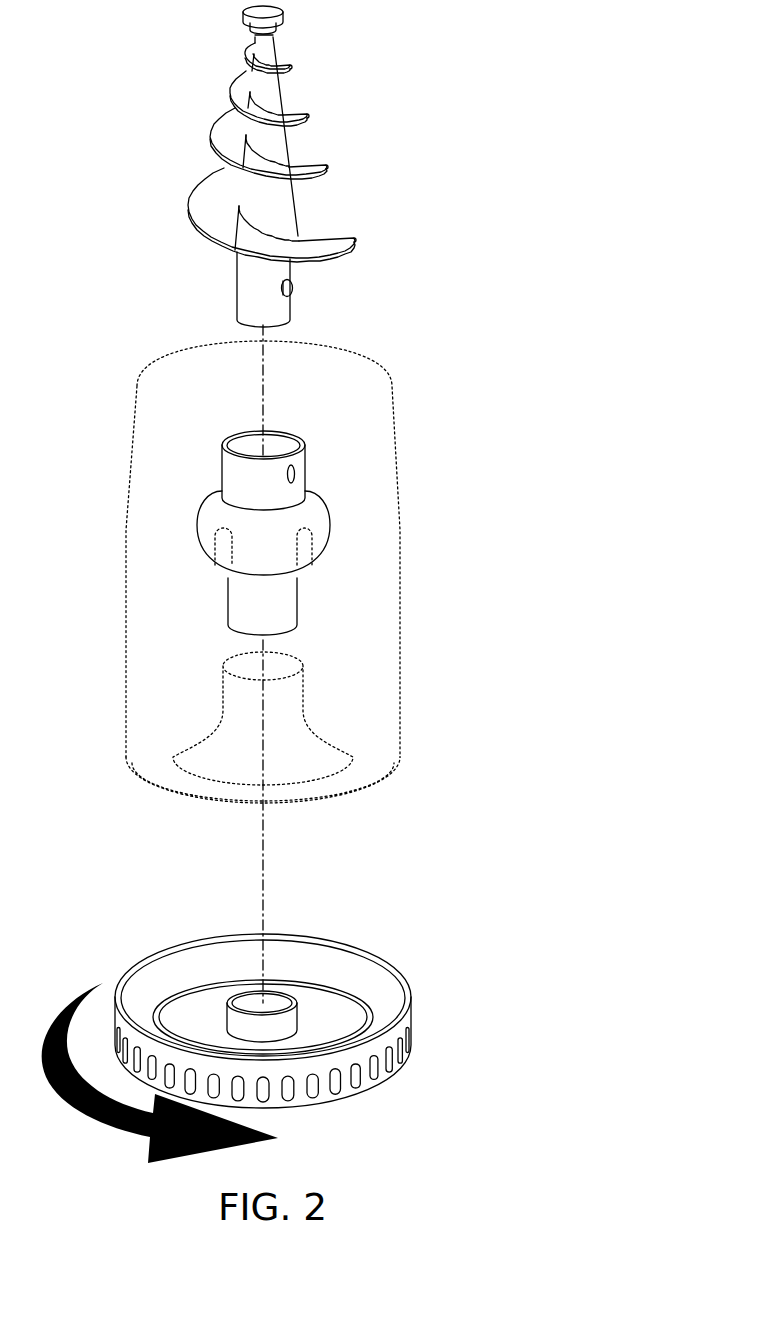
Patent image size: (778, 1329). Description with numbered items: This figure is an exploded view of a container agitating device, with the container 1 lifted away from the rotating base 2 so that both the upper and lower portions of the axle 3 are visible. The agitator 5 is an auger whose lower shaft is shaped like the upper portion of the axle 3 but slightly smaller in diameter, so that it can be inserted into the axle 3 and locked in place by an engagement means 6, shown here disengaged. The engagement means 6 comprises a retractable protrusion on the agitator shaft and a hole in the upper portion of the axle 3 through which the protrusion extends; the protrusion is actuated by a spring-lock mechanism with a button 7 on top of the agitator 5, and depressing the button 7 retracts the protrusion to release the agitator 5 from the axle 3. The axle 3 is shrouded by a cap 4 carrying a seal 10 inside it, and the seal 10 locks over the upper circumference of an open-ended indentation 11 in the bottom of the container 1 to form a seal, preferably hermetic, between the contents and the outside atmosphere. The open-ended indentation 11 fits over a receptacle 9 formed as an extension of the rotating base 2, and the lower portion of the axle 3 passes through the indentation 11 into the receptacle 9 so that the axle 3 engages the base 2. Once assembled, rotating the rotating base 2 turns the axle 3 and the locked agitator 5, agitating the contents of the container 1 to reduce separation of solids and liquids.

The container 1 is at (127, 495).
The rotating base 2 is at (410, 1023).
The axle 3 is at (222, 463).
The cap 4 is at (330, 510).
The agitator 5 is at (296, 210).
The engagement means 6 is at (295, 287).
The button 7 is at (243, 16).
The receptacle 9 is at (280, 1028).
The seal 10 is at (221, 543).
The open-ended indentation 11 is at (240, 710).